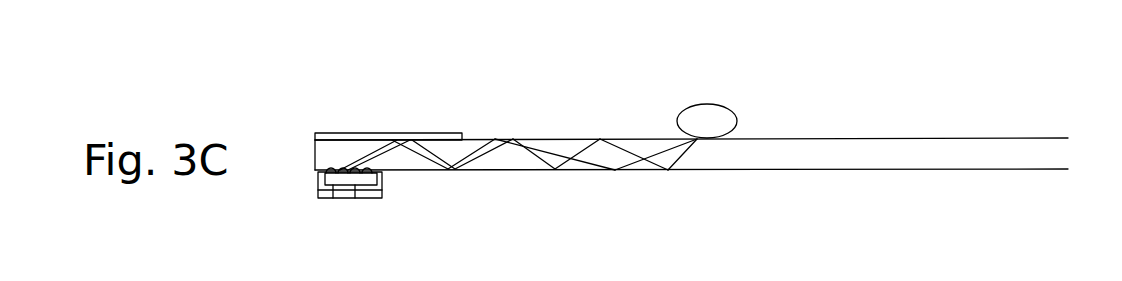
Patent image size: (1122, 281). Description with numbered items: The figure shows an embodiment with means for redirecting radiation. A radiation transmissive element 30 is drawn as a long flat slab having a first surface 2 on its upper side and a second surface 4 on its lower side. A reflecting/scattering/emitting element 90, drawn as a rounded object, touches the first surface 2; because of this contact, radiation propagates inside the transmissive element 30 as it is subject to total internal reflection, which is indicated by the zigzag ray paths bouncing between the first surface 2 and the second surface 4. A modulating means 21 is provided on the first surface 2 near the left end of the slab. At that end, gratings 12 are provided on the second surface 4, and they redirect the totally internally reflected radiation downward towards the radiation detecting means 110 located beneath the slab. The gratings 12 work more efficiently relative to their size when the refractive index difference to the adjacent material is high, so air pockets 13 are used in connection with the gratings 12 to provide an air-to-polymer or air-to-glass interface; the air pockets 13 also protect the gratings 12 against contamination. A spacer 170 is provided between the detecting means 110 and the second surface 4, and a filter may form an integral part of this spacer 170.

The first surface 2 is at (956, 128).
The second surface 4 is at (921, 180).
The gratings 12 is at (338, 172).
The air pockets 13 is at (378, 177).
The modulating means 21 is at (442, 133).
The radiation transmissive element 30 is at (845, 138).
The reflecting/scattering/emitting element 90 is at (711, 103).
The radiation detecting means 110 is at (372, 199).
The spacer 170 is at (318, 184).